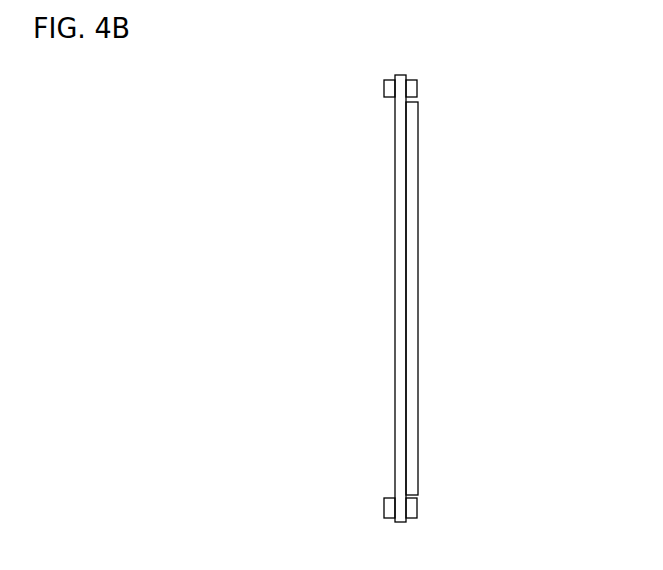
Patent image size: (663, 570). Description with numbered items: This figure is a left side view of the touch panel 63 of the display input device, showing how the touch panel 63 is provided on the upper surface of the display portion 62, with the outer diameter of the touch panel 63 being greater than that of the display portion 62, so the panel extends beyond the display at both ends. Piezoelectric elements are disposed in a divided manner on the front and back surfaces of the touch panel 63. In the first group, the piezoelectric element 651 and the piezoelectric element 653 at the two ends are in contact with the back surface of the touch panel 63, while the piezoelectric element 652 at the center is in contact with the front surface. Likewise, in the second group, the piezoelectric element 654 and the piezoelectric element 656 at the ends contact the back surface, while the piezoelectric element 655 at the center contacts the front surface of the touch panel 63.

The display portion 62 is at (418, 180).
The touch panel 63 is at (395, 215).
The piezoelectric element 651 is at (480, 85).
The piezoelectric element 652 is at (384, 89).
The piezoelectric element 653 is at (417, 90).
The piezoelectric element 654 is at (480, 504).
The piezoelectric element 655 is at (384, 507).
The piezoelectric element 656 is at (417, 508).